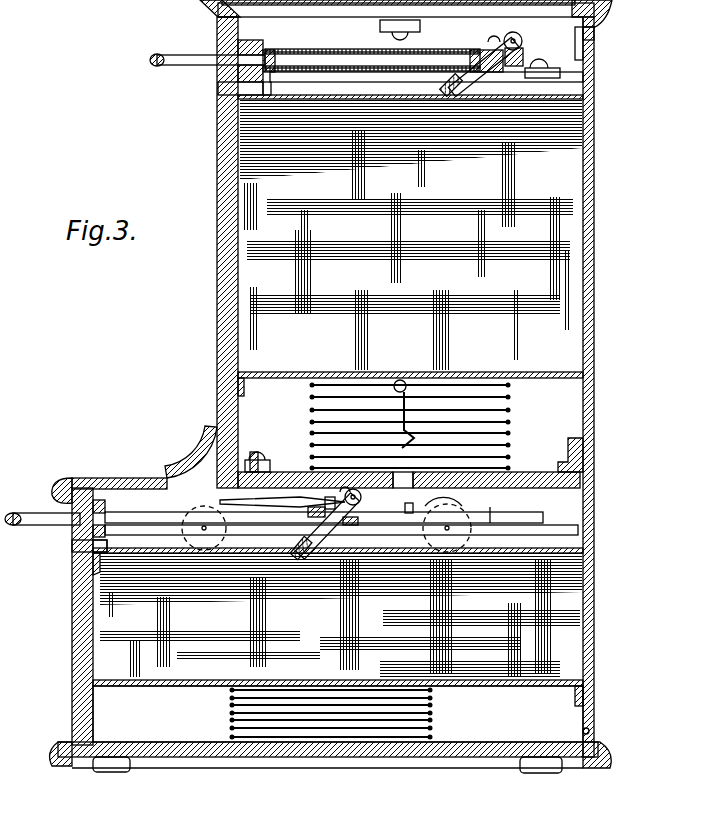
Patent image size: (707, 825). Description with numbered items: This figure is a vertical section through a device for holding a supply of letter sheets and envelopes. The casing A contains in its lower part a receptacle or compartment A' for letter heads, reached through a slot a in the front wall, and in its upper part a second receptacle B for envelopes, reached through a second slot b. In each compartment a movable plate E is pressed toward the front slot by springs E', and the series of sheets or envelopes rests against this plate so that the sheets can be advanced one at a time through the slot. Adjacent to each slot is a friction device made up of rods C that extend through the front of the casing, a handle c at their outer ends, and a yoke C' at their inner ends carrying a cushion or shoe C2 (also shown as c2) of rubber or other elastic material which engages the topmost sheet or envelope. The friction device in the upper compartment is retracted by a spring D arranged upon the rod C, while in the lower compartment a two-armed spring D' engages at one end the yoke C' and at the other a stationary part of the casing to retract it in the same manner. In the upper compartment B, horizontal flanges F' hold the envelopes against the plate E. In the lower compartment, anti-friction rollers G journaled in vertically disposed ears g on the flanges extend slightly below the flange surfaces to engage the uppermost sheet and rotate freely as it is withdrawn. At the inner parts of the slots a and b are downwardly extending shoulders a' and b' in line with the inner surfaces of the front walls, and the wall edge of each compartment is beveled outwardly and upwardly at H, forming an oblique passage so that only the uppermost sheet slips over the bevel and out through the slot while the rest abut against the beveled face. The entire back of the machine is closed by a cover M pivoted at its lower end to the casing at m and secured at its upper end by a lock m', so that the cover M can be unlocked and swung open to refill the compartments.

The cover M is at (588, 310).
The casing A is at (316, 599).
The receptacle or compartment A' is at (338, 711).
The oblique or beveled surface H is at (218, 108).
The handle c is at (158, 56).
The rod C is at (324, 274).
The spring D is at (276, 48).
The two-armed spring D' is at (355, 503).
The slot b is at (217, 92).
The shoulder b' is at (282, 86).
The flange F' is at (344, 313).
The cushion or shoe C2 is at (442, 88).
The cushion or shoe c2 is at (292, 548).
The yoke C' is at (428, 295).
The lock m' is at (603, 41).
The pivot m is at (605, 734).
The movable plate E is at (338, 390).
The spring E' is at (407, 560).
The receptacle B is at (254, 425).
The anti-friction roller G is at (475, 500).
The ear g is at (328, 507).
The slot a is at (71, 550).
The shoulder a' is at (115, 546).